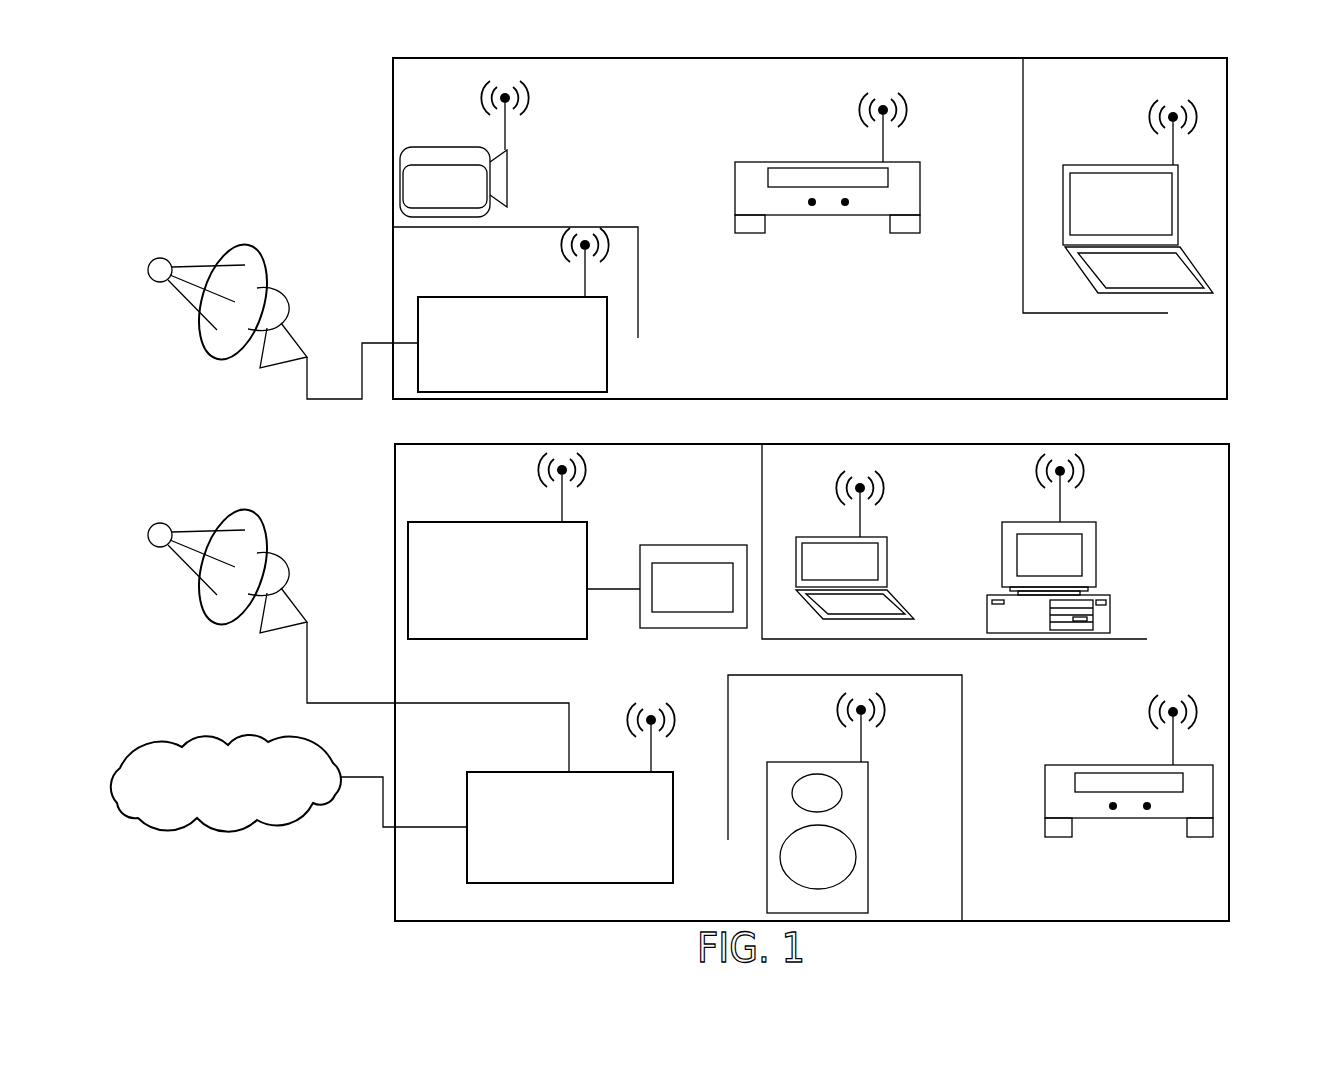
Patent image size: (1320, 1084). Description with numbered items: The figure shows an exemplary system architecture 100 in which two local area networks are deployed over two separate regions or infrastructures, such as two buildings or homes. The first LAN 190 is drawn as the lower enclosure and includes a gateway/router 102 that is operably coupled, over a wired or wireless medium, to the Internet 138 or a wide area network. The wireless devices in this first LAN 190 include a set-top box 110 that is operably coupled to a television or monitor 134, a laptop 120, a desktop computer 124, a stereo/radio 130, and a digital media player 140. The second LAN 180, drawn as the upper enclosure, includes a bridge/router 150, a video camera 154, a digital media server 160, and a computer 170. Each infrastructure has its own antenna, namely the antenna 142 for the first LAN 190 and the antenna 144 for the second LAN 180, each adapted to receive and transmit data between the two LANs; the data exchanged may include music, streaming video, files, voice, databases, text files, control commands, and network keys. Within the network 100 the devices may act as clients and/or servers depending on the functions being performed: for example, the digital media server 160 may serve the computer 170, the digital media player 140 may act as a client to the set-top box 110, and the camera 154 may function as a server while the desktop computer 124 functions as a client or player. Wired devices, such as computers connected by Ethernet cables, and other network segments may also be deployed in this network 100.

The system architecture 100 is at (232, 172).
The gateway/router 102 is at (552, 871).
The set-top box 110 is at (479, 626).
The laptop 120 is at (913, 615).
The desktop computer 124 is at (1080, 520).
The stereo/radio 130 is at (797, 762).
The television or monitor 134 is at (667, 545).
The Internet 138 is at (210, 821).
The digital media player 140 is at (1090, 822).
The antenna 142 is at (297, 608).
The antenna 144 is at (297, 343).
The bridge/router 150 is at (494, 389).
The video camera 154 is at (437, 147).
The digital media server 160 is at (788, 223).
The computer 170 is at (1077, 165).
The second LAN 180 is at (1230, 232).
The first LAN 190 is at (1232, 668).